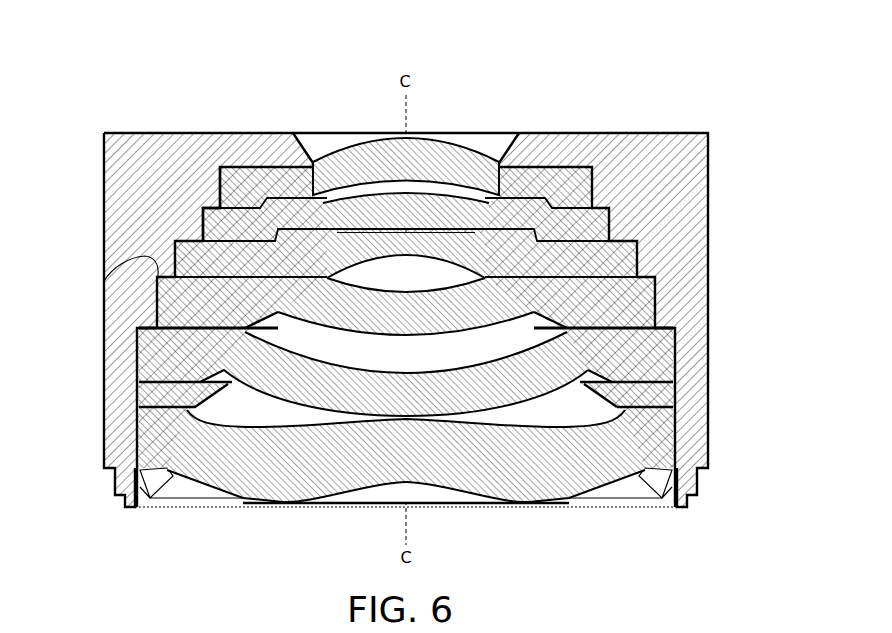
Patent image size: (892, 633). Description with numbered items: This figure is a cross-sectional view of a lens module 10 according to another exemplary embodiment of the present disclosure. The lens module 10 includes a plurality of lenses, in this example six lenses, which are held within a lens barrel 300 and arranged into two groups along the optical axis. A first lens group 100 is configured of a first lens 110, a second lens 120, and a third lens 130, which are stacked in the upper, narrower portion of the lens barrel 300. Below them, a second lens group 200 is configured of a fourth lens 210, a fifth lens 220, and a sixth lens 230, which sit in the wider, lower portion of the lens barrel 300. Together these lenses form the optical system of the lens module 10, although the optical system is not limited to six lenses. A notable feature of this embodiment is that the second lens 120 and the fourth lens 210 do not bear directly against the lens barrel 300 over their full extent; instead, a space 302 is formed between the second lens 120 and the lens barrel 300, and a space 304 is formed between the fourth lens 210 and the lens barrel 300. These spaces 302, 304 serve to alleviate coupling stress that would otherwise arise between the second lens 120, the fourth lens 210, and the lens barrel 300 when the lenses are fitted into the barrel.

The lens module 10 is at (612, 66).
The first lens group 100 is at (788, 163).
The first lens 110 is at (600, 167).
The second lens 120 is at (600, 213).
The third lens 130 is at (640, 254).
The second lens group 200 is at (788, 297).
The fourth lens 210 is at (660, 300).
The fifth lens 220 is at (664, 352).
The sixth lens 230 is at (664, 433).
The lens barrel 300 is at (120, 230).
The space 302 is at (221, 206).
The space 304 is at (104, 284).